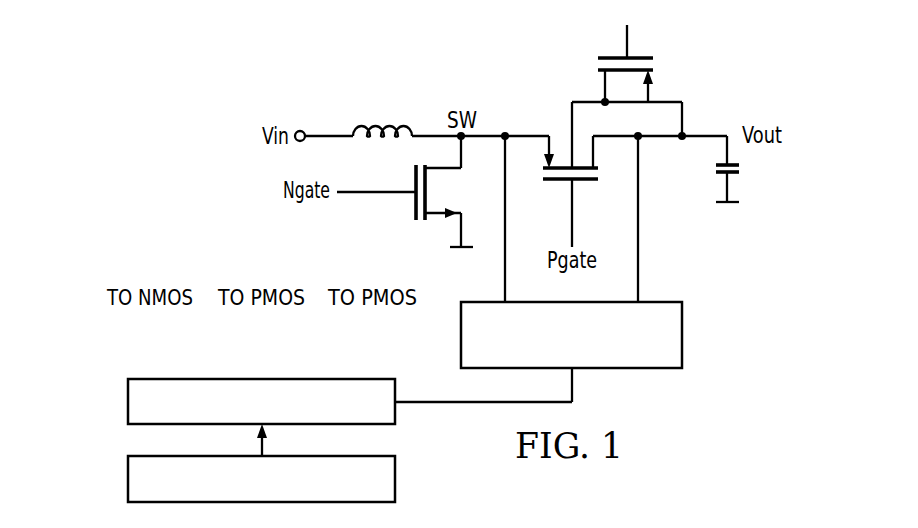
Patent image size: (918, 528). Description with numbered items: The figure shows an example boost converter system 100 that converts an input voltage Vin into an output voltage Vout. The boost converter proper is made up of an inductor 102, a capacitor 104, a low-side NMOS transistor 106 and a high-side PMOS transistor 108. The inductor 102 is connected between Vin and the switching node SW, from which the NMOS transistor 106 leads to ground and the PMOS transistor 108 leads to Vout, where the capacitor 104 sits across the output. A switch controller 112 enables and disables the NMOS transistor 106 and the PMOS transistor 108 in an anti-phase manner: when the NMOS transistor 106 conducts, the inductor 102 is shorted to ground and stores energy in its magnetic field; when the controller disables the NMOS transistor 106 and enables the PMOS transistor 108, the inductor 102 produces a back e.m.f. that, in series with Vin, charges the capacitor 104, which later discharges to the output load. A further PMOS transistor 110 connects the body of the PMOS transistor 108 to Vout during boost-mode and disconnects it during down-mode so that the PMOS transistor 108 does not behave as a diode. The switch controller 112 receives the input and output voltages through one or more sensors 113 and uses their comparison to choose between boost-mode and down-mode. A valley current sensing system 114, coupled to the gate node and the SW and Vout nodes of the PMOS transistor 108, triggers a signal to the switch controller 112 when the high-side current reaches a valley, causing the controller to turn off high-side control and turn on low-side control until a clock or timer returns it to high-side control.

The boost converter system 100 is at (207, 102).
The inductor 102 is at (383, 123).
The capacitor 104 is at (738, 170).
The low-side n-channel MOSFET (NMOS) 106 is at (413, 203).
The high-side p-channel MOSFET (PMOS) 108 is at (582, 182).
The PMOS transistor 110 is at (637, 53).
The switch controller 112 is at (127, 415).
The sensors 113 is at (127, 480).
The valley current sensing system 114 is at (683, 335).